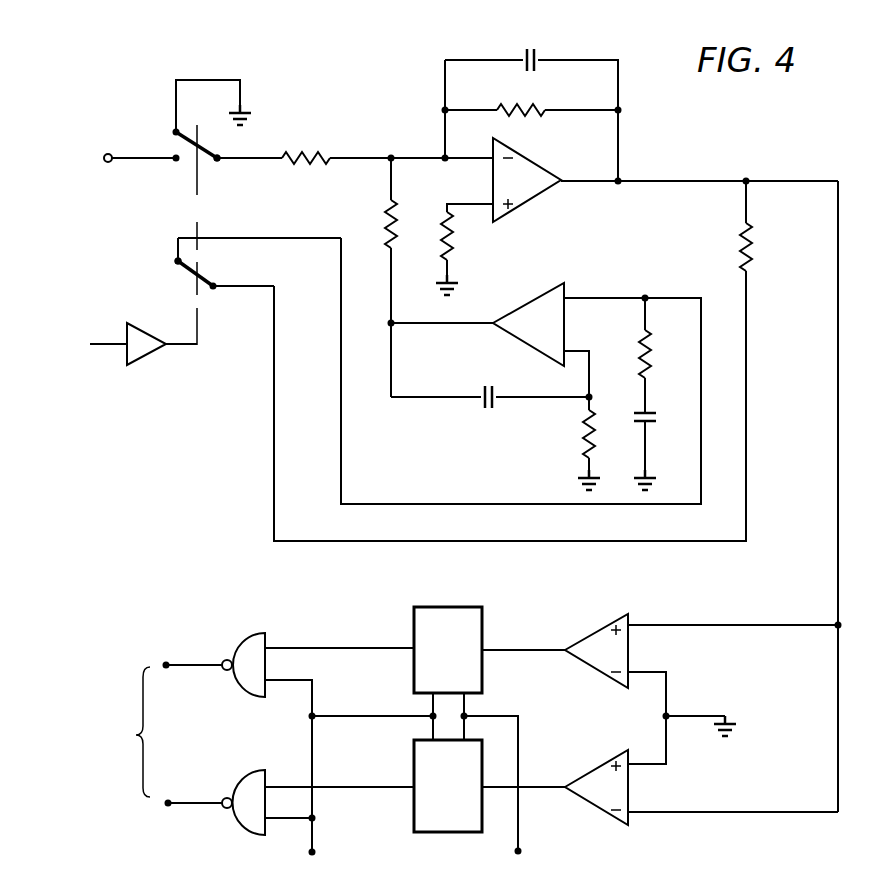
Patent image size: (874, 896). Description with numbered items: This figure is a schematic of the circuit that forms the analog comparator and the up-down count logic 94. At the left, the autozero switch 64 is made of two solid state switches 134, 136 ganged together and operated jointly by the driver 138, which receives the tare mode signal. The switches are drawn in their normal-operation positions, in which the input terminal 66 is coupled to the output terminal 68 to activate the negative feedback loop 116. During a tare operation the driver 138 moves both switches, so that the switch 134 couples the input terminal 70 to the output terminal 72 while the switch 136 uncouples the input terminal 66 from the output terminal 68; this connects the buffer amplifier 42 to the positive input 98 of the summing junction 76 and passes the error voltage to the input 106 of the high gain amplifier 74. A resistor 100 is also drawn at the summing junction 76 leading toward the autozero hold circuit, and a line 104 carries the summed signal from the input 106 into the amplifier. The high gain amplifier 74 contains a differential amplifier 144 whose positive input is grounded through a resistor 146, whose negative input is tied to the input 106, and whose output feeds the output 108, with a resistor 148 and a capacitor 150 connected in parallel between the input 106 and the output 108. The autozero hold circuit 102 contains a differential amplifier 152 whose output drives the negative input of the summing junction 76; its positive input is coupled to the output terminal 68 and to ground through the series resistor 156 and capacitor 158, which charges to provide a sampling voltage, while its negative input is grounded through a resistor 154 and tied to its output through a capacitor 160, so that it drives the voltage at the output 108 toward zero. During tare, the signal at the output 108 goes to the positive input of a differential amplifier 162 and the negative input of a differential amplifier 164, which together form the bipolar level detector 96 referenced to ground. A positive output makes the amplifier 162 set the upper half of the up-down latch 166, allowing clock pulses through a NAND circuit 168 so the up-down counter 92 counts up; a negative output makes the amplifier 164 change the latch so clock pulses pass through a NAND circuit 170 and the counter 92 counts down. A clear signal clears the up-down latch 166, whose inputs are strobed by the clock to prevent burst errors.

The buffer amplifier 42 is at (67, 219).
The autozero switch 64 is at (193, 235).
The input terminal 66 is at (215, 290).
The output terminal 68 is at (175, 261).
The input terminal 70 is at (172, 153).
The output terminal 72 is at (218, 163).
The high gain amplifier 74 is at (529, 158).
The summing junction 76 is at (389, 163).
The up-down counter 92 is at (87, 732).
The up-down count logic 94 is at (426, 744).
The bipolar level detector 96 is at (662, 728).
The positive input 98 is at (352, 152).
The resistor 100 is at (388, 212).
The autozero hold circuit 102 is at (521, 371).
The inverting input line 104 is at (429, 162).
The input 106 is at (442, 152).
The output 108 is at (620, 187).
The negative feedback loop 116 is at (545, 541).
The solid state switch 134 is at (208, 145).
The solid state switch 136 is at (195, 282).
The driver 138 is at (138, 365).
The differential amplifier 144 is at (528, 198).
The resistor 146 is at (470, 242).
The resistor 148 is at (531, 115).
The capacitor 150 is at (535, 54).
The differential amplifier 152 is at (563, 292).
The resistor 154 is at (583, 437).
The resistor 156 is at (655, 352).
The capacitor 158 is at (655, 420).
The capacitor 160 is at (491, 410).
The differential amplifier 162 is at (595, 634).
The differential amplifier 164 is at (600, 815).
The up-down latch 166 is at (466, 713).
The NAND circuit 168 is at (266, 632).
The NAND circuit 170 is at (249, 832).